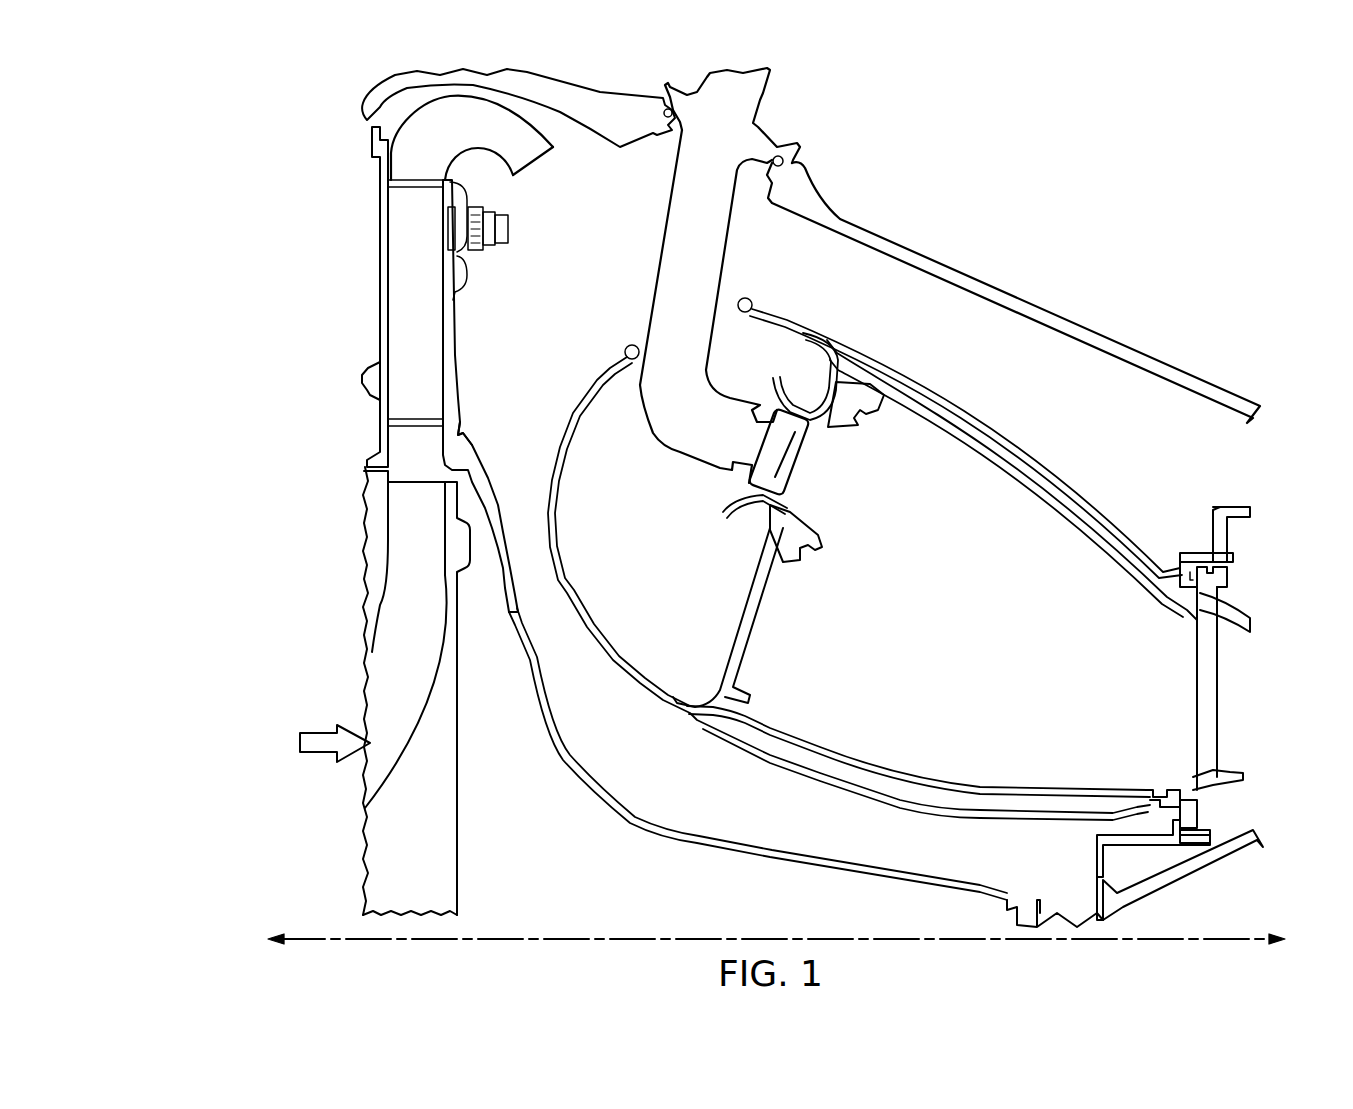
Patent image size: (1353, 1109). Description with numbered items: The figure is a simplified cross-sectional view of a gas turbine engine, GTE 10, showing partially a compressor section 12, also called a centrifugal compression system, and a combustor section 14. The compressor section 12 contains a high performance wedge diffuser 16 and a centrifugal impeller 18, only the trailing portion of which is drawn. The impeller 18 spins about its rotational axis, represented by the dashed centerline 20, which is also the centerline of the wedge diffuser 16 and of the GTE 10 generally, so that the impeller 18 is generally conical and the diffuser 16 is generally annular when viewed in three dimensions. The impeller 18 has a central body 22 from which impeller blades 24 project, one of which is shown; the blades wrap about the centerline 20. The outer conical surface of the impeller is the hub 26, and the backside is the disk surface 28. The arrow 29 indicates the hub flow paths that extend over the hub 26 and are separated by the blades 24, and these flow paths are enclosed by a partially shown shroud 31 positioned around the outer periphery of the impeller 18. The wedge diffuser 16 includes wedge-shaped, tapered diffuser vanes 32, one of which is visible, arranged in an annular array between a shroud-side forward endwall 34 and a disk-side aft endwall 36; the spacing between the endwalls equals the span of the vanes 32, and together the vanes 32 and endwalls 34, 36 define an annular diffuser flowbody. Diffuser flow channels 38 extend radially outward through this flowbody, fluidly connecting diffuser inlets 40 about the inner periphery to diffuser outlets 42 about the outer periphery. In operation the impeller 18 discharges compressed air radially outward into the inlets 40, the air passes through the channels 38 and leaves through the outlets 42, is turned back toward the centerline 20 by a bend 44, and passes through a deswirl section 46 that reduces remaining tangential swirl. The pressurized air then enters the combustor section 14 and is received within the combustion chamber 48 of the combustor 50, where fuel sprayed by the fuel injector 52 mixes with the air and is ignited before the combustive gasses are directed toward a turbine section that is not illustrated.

The gas turbine engine 10 is at (190, 132).
The compressor section 12 is at (258, 290).
The combustor section 14 is at (1040, 424).
The high performance wedge diffuser 16 is at (468, 358).
The impeller 18 is at (358, 700).
The centerline 20 is at (600, 939).
The central body 22 is at (432, 868).
The impeller blades 24 is at (398, 503).
The hub 26 is at (423, 738).
The disk surface 28 is at (458, 803).
The arrow 29 is at (298, 734).
The shroud 31 is at (373, 557).
The diffuser vanes 32 is at (398, 380).
The forward endwall 34 is at (383, 343).
The aft endwall 36 is at (458, 435).
The diffuser flow channels 38 is at (432, 312).
The diffuser inlets 40 is at (432, 414).
The diffuser outlets 42 is at (432, 232).
The bend 44 is at (461, 141).
The deswirl section 46 is at (530, 157).
The combustion chamber 48 is at (984, 645).
The combustor 50 is at (990, 447).
The fuel injector 52 is at (717, 247).